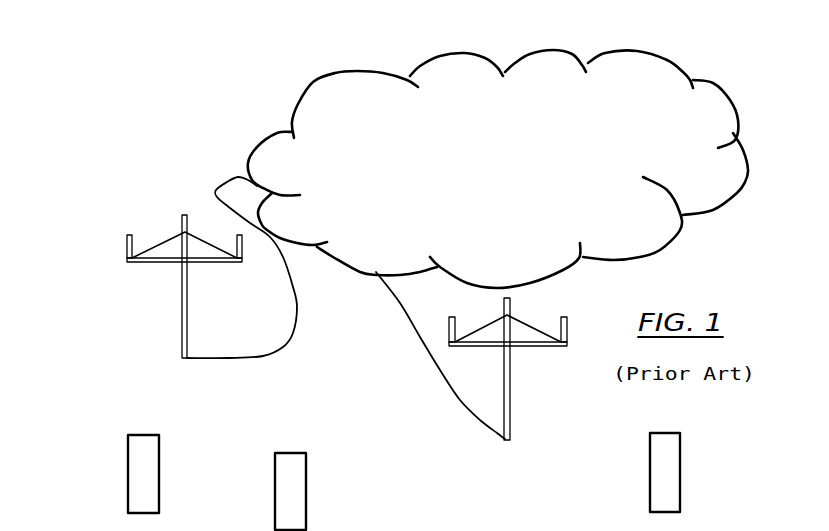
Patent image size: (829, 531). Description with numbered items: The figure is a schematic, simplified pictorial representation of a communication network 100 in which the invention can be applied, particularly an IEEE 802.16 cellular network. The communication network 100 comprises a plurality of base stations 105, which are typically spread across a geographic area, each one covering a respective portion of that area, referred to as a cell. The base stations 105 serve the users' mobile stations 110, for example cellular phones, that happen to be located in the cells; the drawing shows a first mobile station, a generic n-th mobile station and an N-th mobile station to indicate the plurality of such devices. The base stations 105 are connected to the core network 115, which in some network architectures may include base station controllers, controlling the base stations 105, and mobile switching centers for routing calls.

The communication network 100 is at (141, 180).
The base station 105 is at (215, 310).
The mobile station 110 is at (376, 481).
The core network 115 is at (288, 113).